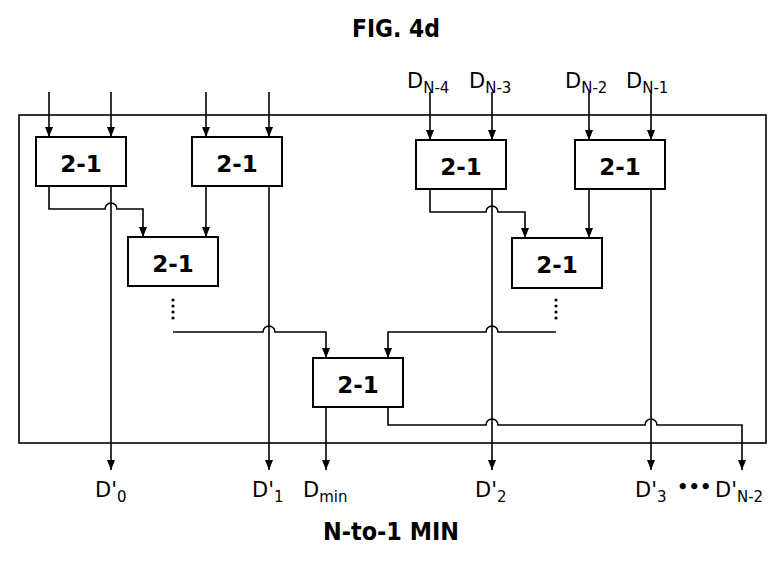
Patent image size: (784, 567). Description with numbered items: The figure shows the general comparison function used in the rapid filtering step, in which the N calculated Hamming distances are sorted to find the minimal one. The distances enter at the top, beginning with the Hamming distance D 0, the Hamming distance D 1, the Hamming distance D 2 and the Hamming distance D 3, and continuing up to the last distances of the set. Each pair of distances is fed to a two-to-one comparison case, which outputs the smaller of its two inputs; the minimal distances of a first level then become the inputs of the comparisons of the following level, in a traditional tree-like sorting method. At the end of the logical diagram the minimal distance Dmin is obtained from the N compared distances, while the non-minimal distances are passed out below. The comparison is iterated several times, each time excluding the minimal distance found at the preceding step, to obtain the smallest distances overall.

The Hamming distance D0 0 is at (51, 103).
The Hamming distance D1 1 is at (113, 103).
The Hamming distance D2 2 is at (208, 103).
The Hamming distance D3 3 is at (271, 103).